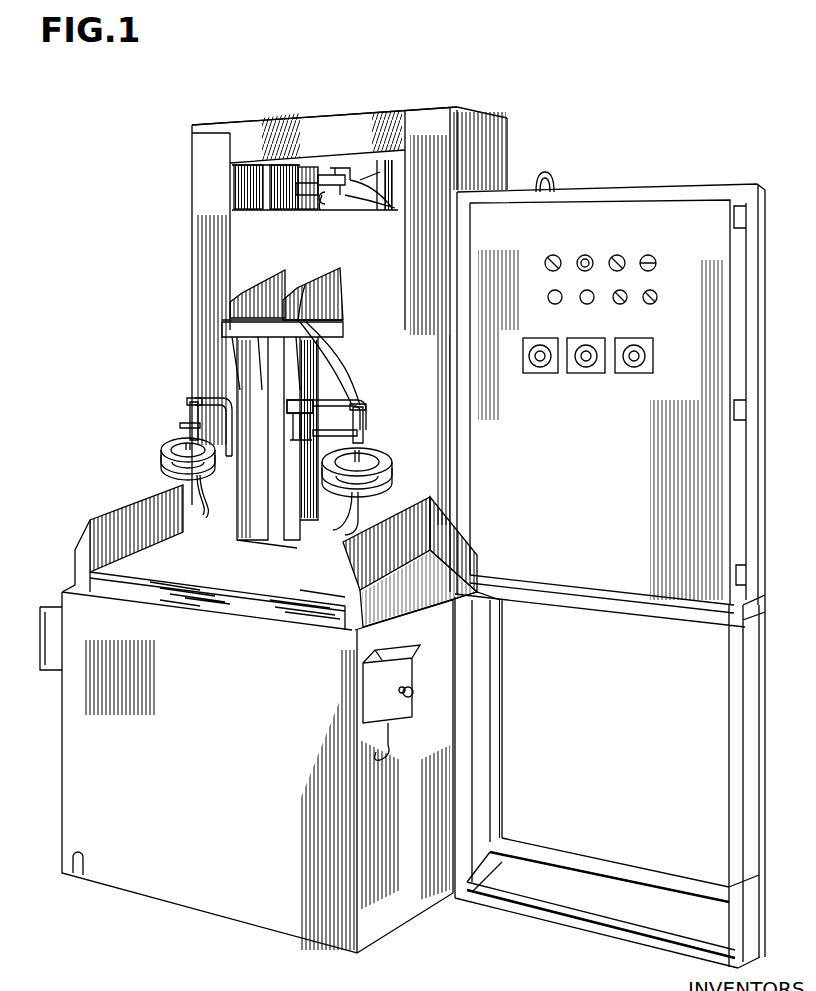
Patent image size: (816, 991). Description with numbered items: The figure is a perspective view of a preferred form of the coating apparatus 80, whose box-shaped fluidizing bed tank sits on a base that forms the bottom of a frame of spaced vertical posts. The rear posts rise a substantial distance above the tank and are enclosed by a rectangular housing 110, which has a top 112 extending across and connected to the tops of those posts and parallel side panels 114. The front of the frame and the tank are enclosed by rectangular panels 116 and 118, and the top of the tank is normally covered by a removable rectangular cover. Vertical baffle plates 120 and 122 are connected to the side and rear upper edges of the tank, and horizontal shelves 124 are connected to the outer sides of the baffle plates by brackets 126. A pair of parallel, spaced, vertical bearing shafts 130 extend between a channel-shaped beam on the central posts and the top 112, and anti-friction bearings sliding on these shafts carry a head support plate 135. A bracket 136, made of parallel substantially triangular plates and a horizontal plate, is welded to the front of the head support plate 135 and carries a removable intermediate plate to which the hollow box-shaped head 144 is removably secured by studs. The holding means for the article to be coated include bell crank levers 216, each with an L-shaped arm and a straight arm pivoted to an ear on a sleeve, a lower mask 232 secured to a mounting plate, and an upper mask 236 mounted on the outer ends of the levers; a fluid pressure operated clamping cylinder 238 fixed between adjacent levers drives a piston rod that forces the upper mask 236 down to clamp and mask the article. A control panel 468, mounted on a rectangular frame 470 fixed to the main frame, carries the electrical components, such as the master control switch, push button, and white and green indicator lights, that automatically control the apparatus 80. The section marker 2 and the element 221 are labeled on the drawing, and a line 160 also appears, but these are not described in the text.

The section line 2- 2 is at (167, 585).
The coating apparatus 80 is at (611, 529).
The rectangular housing 110 is at (328, 94).
The top 112 is at (349, 118).
The side panels 114 is at (349, 350).
The rectangular panel 116 is at (198, 787).
The rectangular panel 118 is at (404, 776).
The vertical baffle plate 120 is at (301, 531).
The vertical baffle plate 122 is at (387, 471).
The horizontal shelf 124 is at (451, 584).
The bracket 126 is at (279, 573).
The bearing shaft 130 is at (315, 168).
The head support plate 135 is at (333, 204).
The bracket 136 is at (292, 324).
The head 144 is at (263, 456).
The work table 160 is at (207, 601).
The bell crank lever 216 is at (166, 435).
The valve block 221 is at (336, 386).
The lower mask 232 is at (278, 482).
The upper mask 236 is at (277, 425).
The clamping cylinder 238 is at (286, 412).
The control panel 468 is at (610, 775).
The rectangular frame 470 is at (607, 907).